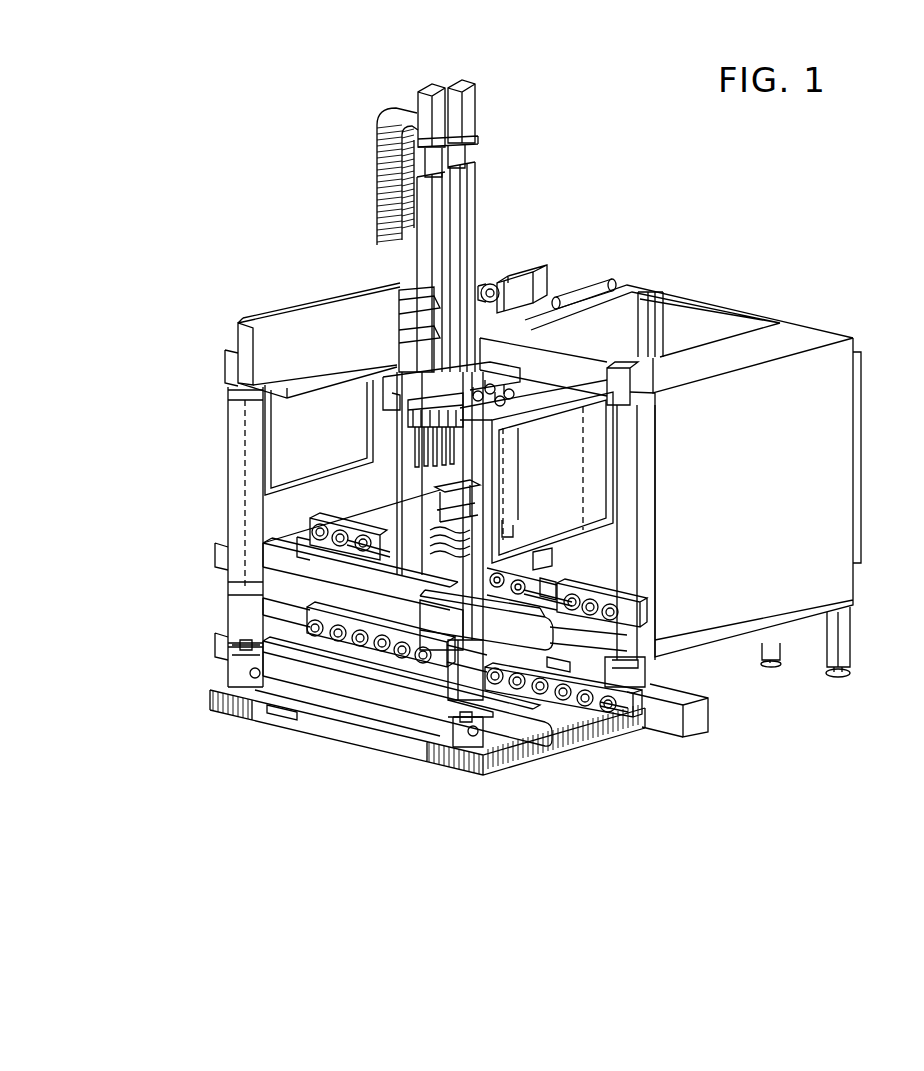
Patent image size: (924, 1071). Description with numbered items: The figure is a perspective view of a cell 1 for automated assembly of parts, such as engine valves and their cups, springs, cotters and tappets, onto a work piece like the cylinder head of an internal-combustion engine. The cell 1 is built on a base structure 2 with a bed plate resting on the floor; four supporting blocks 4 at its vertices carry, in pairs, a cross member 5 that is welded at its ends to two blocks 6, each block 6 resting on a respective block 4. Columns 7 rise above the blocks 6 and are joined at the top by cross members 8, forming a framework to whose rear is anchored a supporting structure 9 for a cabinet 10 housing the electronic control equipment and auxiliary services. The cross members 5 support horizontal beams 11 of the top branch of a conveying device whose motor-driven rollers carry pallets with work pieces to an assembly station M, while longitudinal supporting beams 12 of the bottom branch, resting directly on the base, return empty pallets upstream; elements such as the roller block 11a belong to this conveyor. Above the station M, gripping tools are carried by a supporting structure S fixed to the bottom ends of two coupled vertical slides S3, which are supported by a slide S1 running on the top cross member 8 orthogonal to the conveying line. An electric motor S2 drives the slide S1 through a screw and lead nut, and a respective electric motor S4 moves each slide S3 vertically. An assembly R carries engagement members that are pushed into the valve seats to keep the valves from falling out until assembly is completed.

The cell 1 is at (238, 224).
The base structure 2 is at (209, 705).
The supporting blocks 4 is at (236, 681).
The cross member 5 is at (280, 600).
The blocks 6 is at (236, 615).
The columns 7 is at (393, 440).
The cross members 8 is at (313, 378).
The supporting structure 9 is at (847, 639).
The cabinet 10 is at (842, 441).
The horizontal beams 11 is at (590, 630).
The conveyor roller block 11a is at (306, 541).
The longitudinal supporting beams 12 is at (646, 696).
The supporting structure S is at (403, 368).
The slide S1 is at (398, 307).
The electric motor S2 is at (539, 265).
The coupled slides S3 is at (441, 229).
The electric motor S4 is at (453, 82).
The assembly station M is at (366, 521).
The assembly R is at (447, 487).